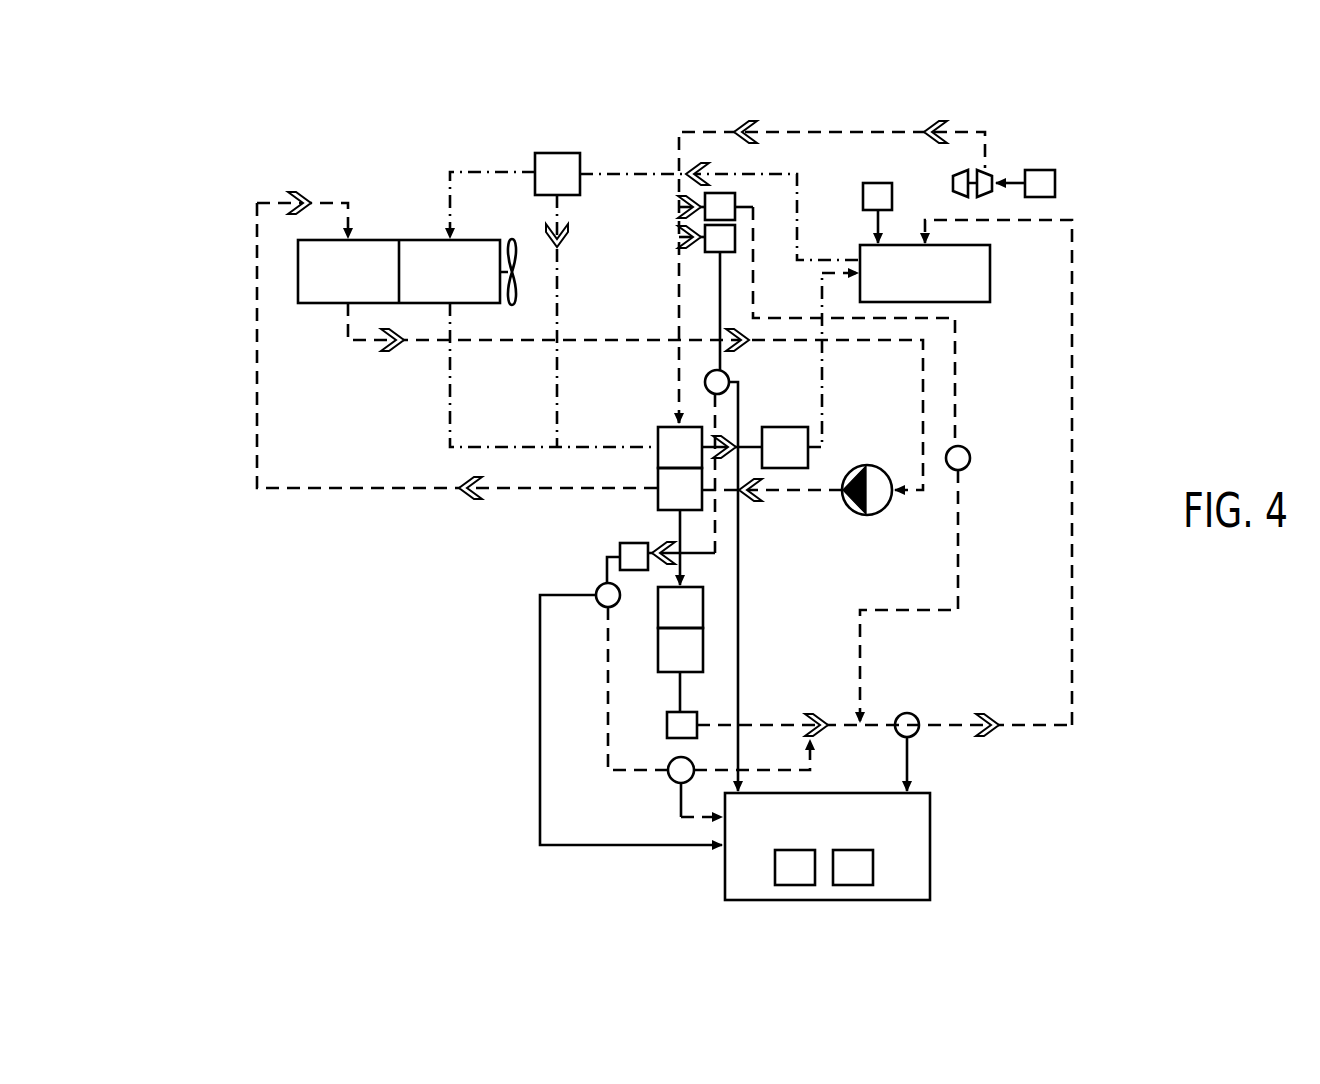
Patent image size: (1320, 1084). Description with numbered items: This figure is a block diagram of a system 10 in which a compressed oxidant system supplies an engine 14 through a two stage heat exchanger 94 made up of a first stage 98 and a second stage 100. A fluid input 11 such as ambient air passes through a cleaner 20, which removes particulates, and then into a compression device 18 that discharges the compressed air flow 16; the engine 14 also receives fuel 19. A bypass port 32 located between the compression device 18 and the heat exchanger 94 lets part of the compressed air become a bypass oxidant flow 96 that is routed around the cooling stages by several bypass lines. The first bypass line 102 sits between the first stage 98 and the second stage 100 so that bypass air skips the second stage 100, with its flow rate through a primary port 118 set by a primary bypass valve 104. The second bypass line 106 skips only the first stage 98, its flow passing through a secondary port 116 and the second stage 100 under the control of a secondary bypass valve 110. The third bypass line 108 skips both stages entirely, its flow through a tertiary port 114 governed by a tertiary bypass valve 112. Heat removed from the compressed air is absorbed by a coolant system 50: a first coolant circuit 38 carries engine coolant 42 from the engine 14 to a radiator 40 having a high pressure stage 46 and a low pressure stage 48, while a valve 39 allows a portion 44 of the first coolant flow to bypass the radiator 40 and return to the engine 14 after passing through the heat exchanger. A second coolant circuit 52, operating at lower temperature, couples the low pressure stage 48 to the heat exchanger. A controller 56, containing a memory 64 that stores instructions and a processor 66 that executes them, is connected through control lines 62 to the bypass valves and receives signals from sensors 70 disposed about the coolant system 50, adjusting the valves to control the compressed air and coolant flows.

The system 10 is at (222, 125).
The fluid input 11 is at (1064, 183).
The engine 14 is at (992, 273).
The compressed air flow 16 is at (838, 132).
The compression device 18 is at (960, 175).
The fuel 19 is at (862, 196).
The cleaner 20 is at (1040, 170).
The bypass port 32 is at (810, 462).
The first coolant circuit 38 is at (448, 172).
The valve 39 is at (555, 153).
The radiator 40 is at (298, 288).
The engine coolant 42 is at (797, 217).
The portion of the first coolant circuit 44 is at (558, 216).
The high pressure stage 46 is at (490, 174).
The low pressure stage 48 is at (343, 270).
The coolant system 50 is at (310, 162).
The second coolant circuit 52 is at (258, 473).
The controller 56 is at (931, 845).
The control lines 62 is at (740, 650).
The memory 64 is at (795, 850).
The processor 66 is at (855, 850).
The sensors 70 is at (729, 375).
The two stage heat exchanger 94 is at (516, 515).
The bypass oxidant flow 96 is at (960, 535).
The first stage 98 is at (658, 432).
The second stage 100 is at (657, 650).
The first bypass line 102 is at (605, 625).
The primary bypass valve 104 is at (637, 572).
The second bypass line 106 is at (720, 312).
The third bypass line 108 is at (960, 382).
The secondary bypass valve 110 is at (729, 253).
The tertiary bypass valve 112 is at (720, 193).
The tertiary port 114 is at (680, 203).
The secondary port 116 is at (680, 238).
The primary port 118 is at (660, 546).